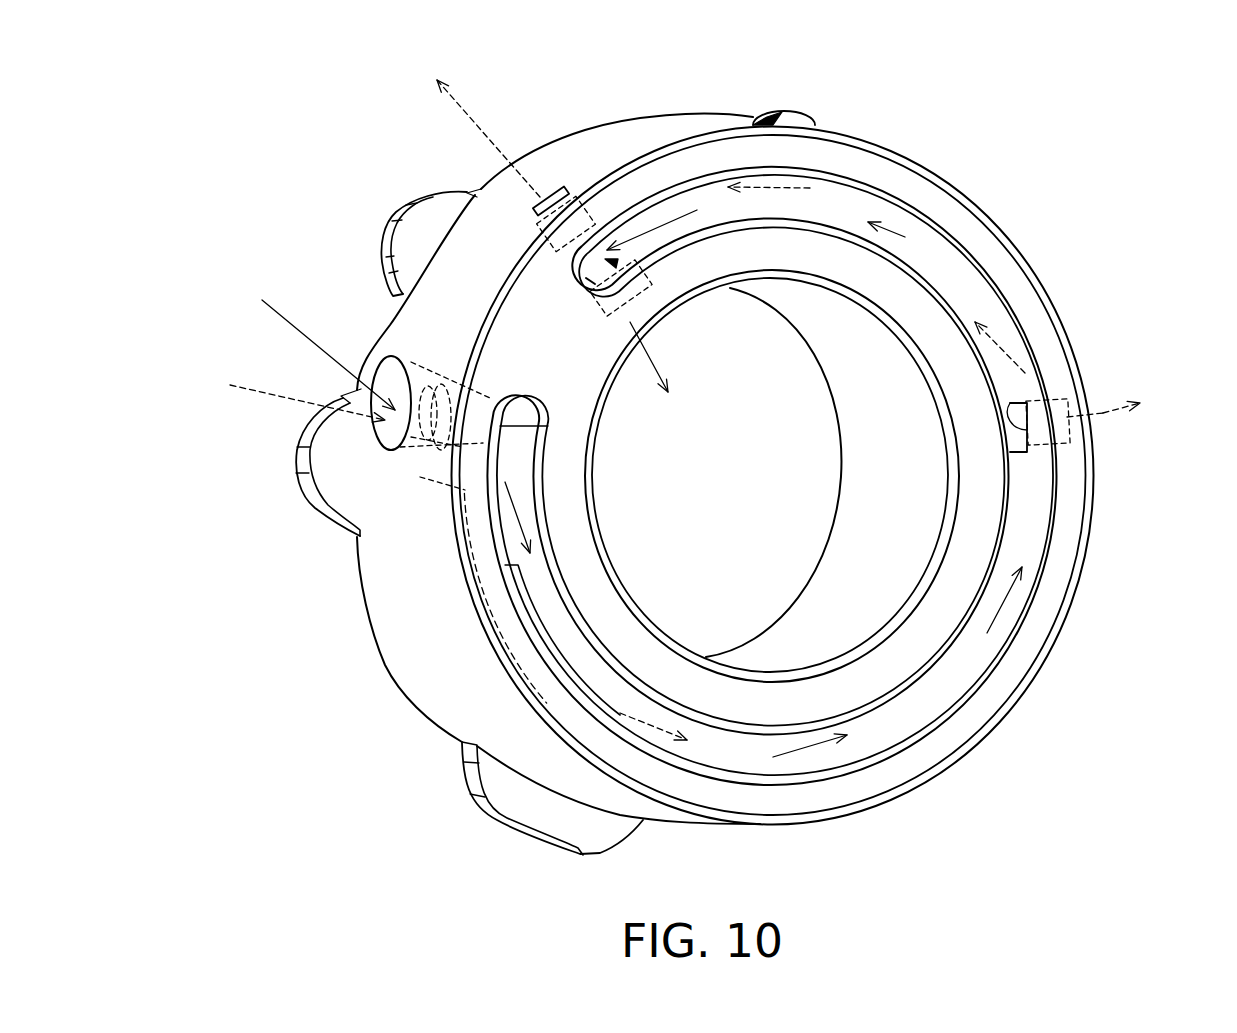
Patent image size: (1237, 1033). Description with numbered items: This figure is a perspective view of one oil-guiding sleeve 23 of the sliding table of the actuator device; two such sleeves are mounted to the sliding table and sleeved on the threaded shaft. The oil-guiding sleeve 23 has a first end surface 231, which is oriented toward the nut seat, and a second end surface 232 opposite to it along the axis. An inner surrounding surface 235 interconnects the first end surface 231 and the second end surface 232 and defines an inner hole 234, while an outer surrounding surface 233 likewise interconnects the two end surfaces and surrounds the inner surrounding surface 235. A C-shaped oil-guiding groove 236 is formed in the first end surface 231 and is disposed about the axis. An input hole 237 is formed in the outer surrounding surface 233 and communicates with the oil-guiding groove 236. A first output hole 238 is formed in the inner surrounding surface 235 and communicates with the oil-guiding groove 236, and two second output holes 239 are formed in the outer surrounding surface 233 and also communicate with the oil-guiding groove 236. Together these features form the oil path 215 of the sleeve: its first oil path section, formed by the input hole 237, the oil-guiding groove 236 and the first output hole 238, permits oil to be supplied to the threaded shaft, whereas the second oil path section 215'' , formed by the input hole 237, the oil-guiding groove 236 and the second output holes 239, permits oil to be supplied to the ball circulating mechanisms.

The oil-guiding sleeve 23 is at (410, 620).
The first end surface 231 is at (1010, 668).
The second end surface 232 is at (408, 695).
The outer surrounding surface 233 is at (418, 548).
The inner hole 234 is at (700, 505).
The inner surrounding surface 235 is at (857, 360).
The oil-guiding groove 236 is at (818, 208).
The input hole 237 is at (397, 400).
The first output hole 238 is at (655, 347).
The second output hole 239 is at (535, 205).
The oil path 215 is at (818, 156).
The second oil path section 215'' is at (1113, 443).